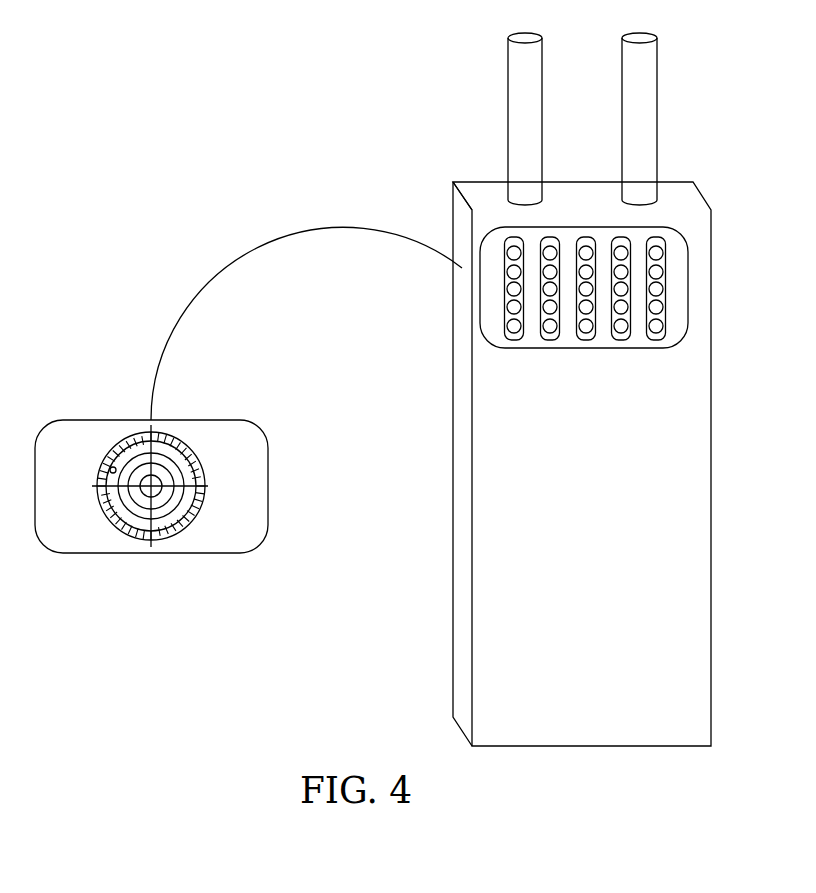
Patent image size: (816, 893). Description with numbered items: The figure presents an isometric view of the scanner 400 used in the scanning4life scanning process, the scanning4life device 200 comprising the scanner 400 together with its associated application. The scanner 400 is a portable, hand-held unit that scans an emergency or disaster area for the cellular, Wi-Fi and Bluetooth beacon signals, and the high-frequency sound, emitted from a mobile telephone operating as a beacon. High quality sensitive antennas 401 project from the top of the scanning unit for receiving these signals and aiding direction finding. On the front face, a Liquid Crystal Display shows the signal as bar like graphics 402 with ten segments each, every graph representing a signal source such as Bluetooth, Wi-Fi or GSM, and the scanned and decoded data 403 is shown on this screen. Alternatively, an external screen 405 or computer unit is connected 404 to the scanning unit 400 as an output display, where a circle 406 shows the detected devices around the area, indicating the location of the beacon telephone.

The scanning4life device 200 is at (675, 518).
The scanner 400 is at (702, 193).
The antennas 401 is at (642, 107).
The bar like graphics 402 is at (665, 247).
The scanned and decoded data 403 is at (655, 292).
The connection 404 is at (235, 270).
The external screen 405 is at (262, 428).
The circle 406 is at (190, 487).